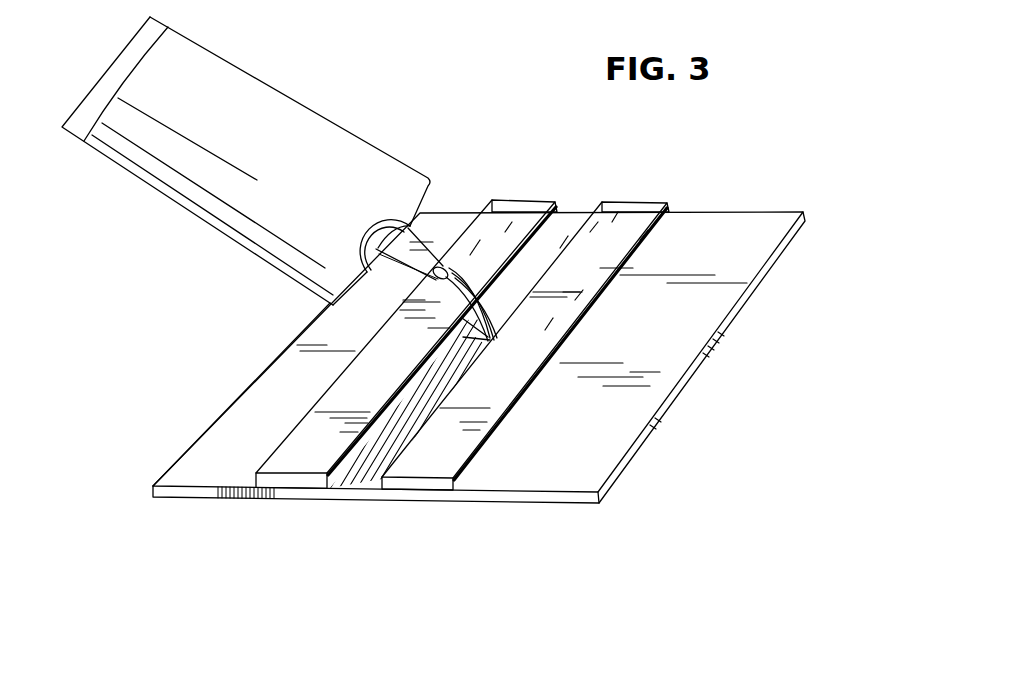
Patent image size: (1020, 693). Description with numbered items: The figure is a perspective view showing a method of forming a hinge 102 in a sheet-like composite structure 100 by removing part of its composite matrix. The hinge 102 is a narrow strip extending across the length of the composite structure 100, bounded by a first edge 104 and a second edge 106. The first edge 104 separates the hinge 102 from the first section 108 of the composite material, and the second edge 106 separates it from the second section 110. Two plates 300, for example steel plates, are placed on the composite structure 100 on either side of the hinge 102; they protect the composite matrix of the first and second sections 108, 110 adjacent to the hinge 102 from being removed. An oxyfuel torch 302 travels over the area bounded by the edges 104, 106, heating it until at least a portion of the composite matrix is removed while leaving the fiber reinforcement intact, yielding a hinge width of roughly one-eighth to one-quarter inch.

The composite structure 100 is at (752, 377).
The hinge 102 is at (357, 480).
The first edge 104 is at (497, 290).
The second edge 106 is at (642, 197).
The first section 108 is at (255, 418).
The second section 110 is at (725, 262).
The plates 300 is at (627, 210).
The torch 302 is at (292, 124).